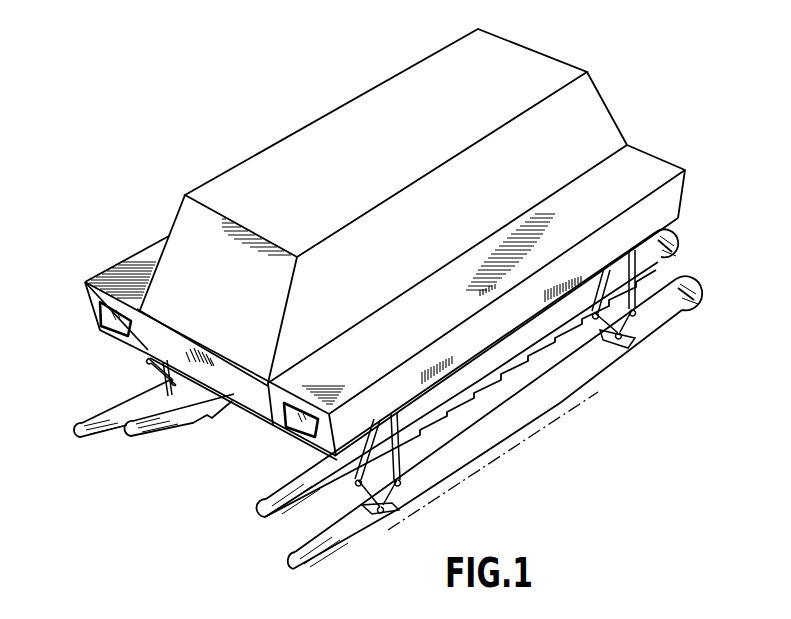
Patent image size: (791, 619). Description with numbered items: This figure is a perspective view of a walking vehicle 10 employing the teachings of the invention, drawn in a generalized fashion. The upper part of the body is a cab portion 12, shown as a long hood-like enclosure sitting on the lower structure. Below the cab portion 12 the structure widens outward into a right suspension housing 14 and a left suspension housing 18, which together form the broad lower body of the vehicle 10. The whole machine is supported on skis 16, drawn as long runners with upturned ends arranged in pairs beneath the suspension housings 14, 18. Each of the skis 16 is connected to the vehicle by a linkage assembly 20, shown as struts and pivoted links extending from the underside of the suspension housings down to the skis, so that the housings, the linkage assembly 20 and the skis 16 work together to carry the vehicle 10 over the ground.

The vehicle 10 is at (229, 153).
The cab portion 12 is at (178, 208).
The right suspension housing 14 is at (93, 313).
The skis 16 is at (134, 436).
The left suspension housing 18 is at (419, 333).
The linkage assembly 20 is at (402, 457).